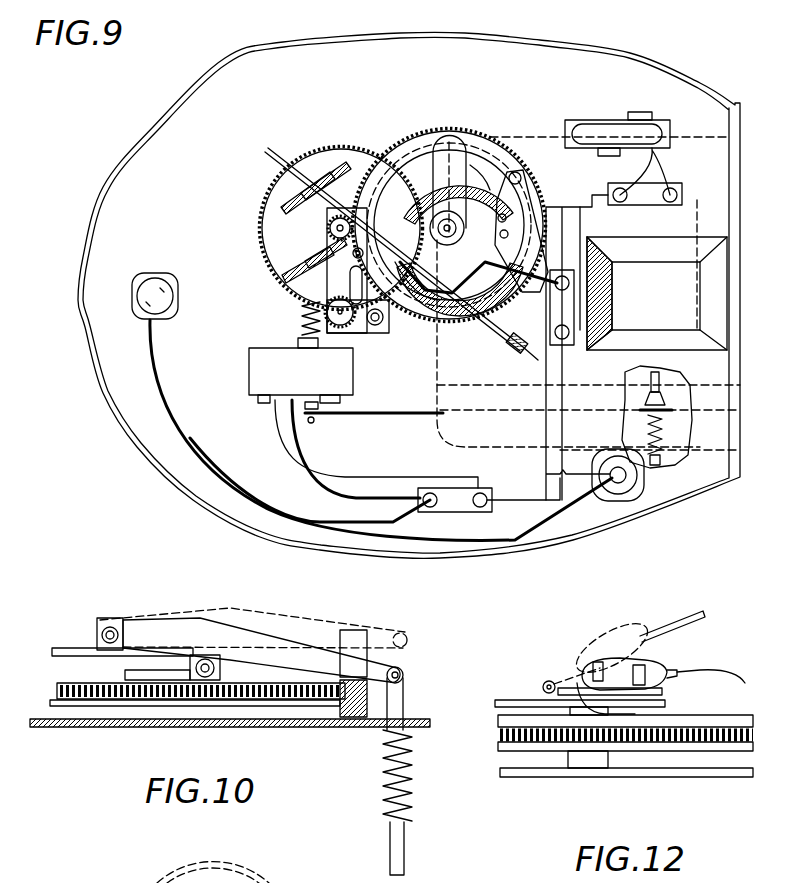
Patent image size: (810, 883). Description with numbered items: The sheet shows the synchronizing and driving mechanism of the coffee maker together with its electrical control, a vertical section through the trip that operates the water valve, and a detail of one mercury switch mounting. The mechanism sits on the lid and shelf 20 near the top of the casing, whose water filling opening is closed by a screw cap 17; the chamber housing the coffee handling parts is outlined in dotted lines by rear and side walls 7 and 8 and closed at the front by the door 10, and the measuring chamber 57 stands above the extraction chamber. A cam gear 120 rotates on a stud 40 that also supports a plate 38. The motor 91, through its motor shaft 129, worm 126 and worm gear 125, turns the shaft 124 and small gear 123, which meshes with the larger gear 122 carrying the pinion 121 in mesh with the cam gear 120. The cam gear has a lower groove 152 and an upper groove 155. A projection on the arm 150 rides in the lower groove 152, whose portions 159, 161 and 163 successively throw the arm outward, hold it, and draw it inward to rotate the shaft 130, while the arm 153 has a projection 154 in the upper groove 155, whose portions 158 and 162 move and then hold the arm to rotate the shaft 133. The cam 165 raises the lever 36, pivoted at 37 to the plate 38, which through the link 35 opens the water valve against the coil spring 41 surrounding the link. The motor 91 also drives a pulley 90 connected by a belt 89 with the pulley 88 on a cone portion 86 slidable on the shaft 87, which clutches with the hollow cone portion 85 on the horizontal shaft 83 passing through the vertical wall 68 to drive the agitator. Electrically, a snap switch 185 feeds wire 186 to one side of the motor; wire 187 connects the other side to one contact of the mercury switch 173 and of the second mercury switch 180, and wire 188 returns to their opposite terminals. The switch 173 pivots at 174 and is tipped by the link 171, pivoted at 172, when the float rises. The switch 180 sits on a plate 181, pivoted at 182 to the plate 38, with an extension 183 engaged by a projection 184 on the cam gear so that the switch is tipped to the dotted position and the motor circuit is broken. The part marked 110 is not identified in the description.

In FIG. 9, the screw cap 17 is at (284, 44).
In FIG. 9, the lid and shelf 20 is at (135, 197).
In FIG. 10, the lid and shelf 20 is at (275, 728).
In FIG. 12, the lid and shelf 20 is at (670, 777).
In FIG. 9, the larger gear 122 is at (265, 200).
In FIG. 9, the cam gear 120 is at (395, 128).
In FIG. 10, the cam gear 120 is at (88, 702).
In FIG. 9, the stud 40 is at (421, 150).
In FIG. 12, the stud 40 is at (589, 764).
In FIG. 9, the lower groove 152 is at (443, 132).
In FIG. 9, the portion of lower groove 163 is at (470, 165).
In FIG. 9, the pivot 182 is at (432, 230).
In FIG. 12, the pivot 182 is at (547, 682).
In FIG. 9, the arm 150 is at (492, 212).
In FIG. 9, the portion of upper groove 162 is at (432, 212).
In FIG. 9, the cam 165 is at (500, 205).
In FIG. 10, the cam 165 is at (222, 672).
In FIG. 9, the upper groove 155 is at (488, 195).
In FIG. 9, the projection 154 is at (535, 180).
In FIG. 9, the arm 153 is at (550, 207).
In FIG. 9, the door 10 is at (266, 159).
In FIG. 9, the plate 38 is at (327, 266).
In FIG. 10, the plate 38 is at (62, 648).
In FIG. 12, the plate 38 is at (507, 700).
In FIG. 9, the pivot 37 is at (356, 253).
In FIG. 10, the pivot 37 is at (111, 630).
In FIG. 9, the pinion 121 is at (328, 220).
In FIG. 9, the portion of lower groove 161 is at (372, 178).
In FIG. 9, the portion of lower groove 159 is at (349, 282).
In FIG. 9, the worm 126 is at (302, 322).
In FIG. 9, the shaft 124 is at (339, 328).
In FIG. 9, the small gear 123 is at (345, 326).
In FIG. 9, the worm gear 125 is at (375, 326).
In FIG. 9, the motor shaft 129 is at (315, 345).
In FIG. 9, the motor 91 is at (262, 366).
In FIG. 9, the pulley 90 is at (323, 424).
In FIG. 9, the belt 89 is at (340, 418).
In FIG. 9, the snap switch 185 is at (165, 278).
In FIG. 9, the wire 188 is at (176, 430).
In FIG. 9, the wire 186 is at (300, 470).
In FIG. 9, the wire 187 is at (400, 482).
In FIG. 9, the side wall 8 is at (545, 135).
In FIG. 9, the rear wall 7 is at (437, 372).
In FIG. 9, the shaft 130 is at (582, 240).
In FIG. 9, the shaft 133 is at (590, 262).
In FIG. 9, the measuring chamber 57 is at (665, 292).
In FIG. 9, the mercury switch 173 is at (591, 122).
In FIG. 9, the pivot 172 is at (640, 120).
In FIG. 9, the link 171 is at (652, 115).
In FIG. 9, the pivot 174 is at (612, 156).
In FIG. 9, the vertical wall 68 is at (632, 397).
In FIG. 9, the horizontal shaft 83 is at (660, 375).
In FIG. 9, the hollow cone portion 85 is at (662, 395).
In FIG. 9, the cone portion 86 is at (665, 410).
In FIG. 9, the pulley 88 is at (665, 425).
In FIG. 9, the shaft 87 is at (662, 460).
In FIG. 9, the second mercury switch 180 is at (460, 262).
In FIG. 12, the second mercury switch 180 is at (614, 657).
In FIG. 9, the projection 184 is at (512, 297).
In FIG. 12, the projection 184 is at (670, 664).
In FIG. 9, the lever 36 is at (475, 314).
In FIG. 10, the lever 36 is at (237, 612).
In FIG. 9, the plate 181 is at (432, 310).
In FIG. 12, the plate 181 is at (567, 664).
In FIG. 9, the portion of upper cam 158 is at (410, 275).
In FIG. 10, the coil spring 41 is at (412, 779).
In FIG. 10, the link 35 is at (403, 853).
In FIG. 12, the rack 110 is at (529, 746).
In FIG. 12, the extension 183 is at (640, 713).